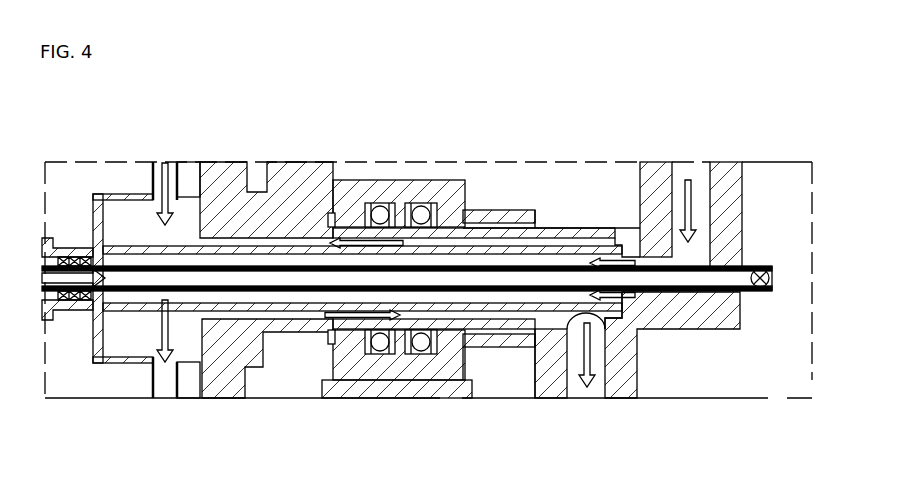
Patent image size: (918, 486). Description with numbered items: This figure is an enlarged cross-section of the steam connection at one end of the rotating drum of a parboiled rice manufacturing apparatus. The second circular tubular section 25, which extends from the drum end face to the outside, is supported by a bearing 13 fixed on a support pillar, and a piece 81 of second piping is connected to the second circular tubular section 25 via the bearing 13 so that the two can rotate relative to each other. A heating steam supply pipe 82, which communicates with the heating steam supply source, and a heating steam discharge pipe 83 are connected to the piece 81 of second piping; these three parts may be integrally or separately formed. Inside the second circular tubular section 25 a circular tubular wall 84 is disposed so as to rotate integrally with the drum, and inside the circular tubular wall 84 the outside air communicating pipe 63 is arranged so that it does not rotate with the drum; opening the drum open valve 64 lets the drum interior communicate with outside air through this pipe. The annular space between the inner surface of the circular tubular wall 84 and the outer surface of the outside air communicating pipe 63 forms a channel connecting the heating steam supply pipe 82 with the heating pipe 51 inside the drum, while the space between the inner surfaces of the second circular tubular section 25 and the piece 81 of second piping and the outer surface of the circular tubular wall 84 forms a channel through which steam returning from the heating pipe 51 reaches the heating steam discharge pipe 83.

The bearing 13 is at (400, 207).
The second circular tubular section 25 is at (293, 228).
The heating pipe 51 is at (153, 180).
The outside air communicating pipe 63 is at (267, 278).
The drum open valve 64 is at (760, 268).
The piece of second piping 81 is at (507, 216).
The heating steam supply pipe 82 is at (718, 172).
The heating steam discharge pipe 83 is at (625, 378).
The circular tubular wall 84 is at (562, 248).